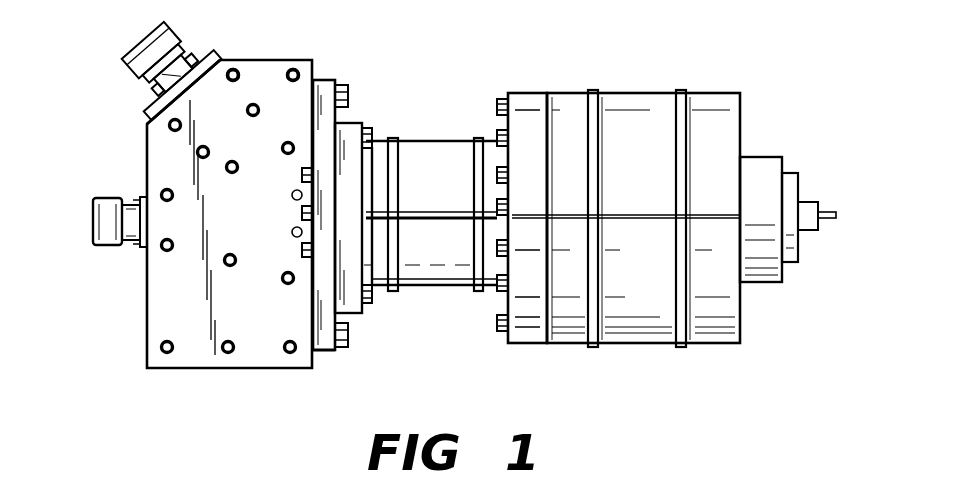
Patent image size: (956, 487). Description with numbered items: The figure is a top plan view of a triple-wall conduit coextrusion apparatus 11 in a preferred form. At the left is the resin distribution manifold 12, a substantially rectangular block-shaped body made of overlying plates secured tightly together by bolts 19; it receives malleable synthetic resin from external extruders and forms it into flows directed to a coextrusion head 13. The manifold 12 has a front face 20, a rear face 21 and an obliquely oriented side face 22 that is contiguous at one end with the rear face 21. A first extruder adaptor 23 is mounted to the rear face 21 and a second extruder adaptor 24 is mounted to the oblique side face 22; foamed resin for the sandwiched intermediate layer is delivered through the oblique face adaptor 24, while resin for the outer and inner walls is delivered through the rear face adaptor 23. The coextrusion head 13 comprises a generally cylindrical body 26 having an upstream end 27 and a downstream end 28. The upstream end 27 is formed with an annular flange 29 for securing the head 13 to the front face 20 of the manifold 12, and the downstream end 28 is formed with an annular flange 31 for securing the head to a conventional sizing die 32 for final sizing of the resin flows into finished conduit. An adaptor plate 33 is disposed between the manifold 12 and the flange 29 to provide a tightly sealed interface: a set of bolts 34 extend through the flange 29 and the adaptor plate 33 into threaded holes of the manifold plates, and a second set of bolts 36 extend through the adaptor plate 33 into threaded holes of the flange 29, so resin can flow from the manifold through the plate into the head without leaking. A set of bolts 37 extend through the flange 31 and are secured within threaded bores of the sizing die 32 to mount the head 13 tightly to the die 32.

The triple-wall conduit coextrusion apparatus 11 is at (802, 68).
The resin distribution manifold 12 is at (228, 371).
The coextrusion head 13 is at (441, 76).
The bolts 19 is at (293, 67).
The front face 20 is at (317, 78).
The rear face 21 is at (147, 278).
The obliquely oriented side face 22 is at (153, 125).
The first extruder adaptor 23 is at (122, 191).
The second extruder adaptor 24 is at (137, 88).
The cylindrical body 26 is at (456, 288).
The upstream end 27 is at (379, 313).
The downstream end 28 is at (500, 306).
The annular flange 29 is at (353, 121).
The annular flange 31 is at (528, 101).
The sizing die 32 is at (638, 101).
The adaptor plate 33 is at (318, 352).
The bolts 34 is at (370, 128).
The second set of bolts 36 is at (302, 250).
The bolts 37 is at (497, 207).